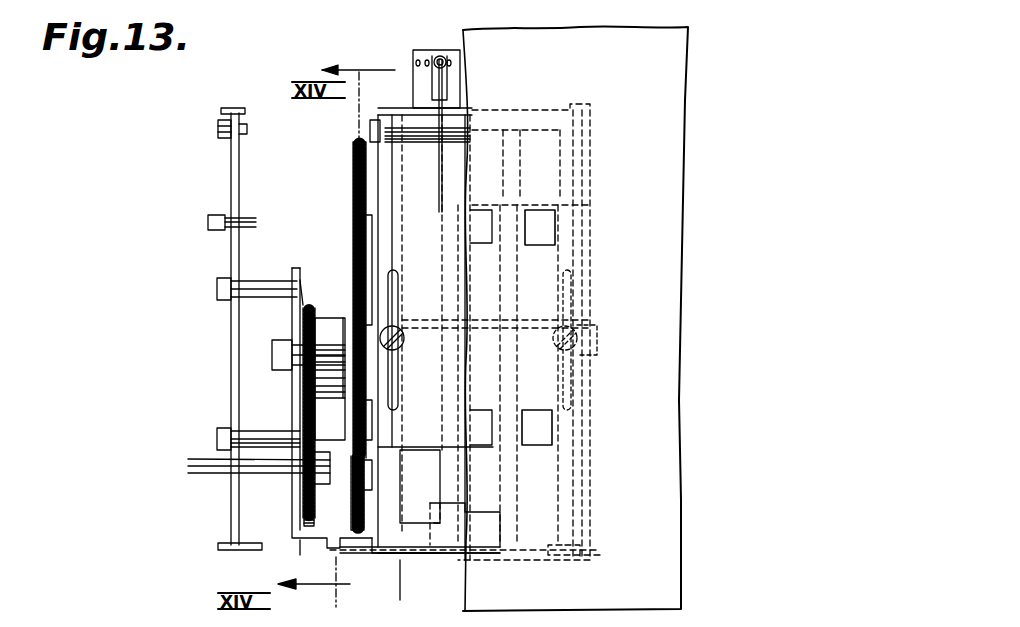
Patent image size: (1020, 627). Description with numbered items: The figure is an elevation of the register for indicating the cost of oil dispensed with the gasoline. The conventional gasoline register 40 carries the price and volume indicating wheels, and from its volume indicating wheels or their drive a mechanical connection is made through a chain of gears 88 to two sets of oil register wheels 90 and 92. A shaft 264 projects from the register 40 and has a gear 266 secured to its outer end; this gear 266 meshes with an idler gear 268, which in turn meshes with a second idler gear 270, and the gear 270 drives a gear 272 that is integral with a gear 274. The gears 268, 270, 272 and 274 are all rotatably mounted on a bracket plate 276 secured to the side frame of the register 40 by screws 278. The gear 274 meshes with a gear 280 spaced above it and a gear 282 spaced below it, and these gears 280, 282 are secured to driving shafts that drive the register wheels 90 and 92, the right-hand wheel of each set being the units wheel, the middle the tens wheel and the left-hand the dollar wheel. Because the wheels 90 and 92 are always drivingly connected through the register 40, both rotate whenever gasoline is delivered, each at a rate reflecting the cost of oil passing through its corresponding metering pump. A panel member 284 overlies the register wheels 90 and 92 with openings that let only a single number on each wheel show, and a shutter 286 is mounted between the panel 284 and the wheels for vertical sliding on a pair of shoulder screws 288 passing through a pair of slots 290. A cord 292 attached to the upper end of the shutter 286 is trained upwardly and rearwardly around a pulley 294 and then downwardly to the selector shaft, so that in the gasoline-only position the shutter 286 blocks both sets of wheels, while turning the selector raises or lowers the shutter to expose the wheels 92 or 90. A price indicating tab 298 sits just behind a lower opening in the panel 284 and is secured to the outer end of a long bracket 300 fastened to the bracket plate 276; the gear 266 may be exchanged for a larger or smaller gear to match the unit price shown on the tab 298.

The register 40 is at (240, 189).
The chain of gears 88 is at (327, 176).
The register wheels 90 is at (515, 102).
The register wheels 92 is at (442, 527).
The shaft 264 is at (283, 476).
The gear 266 is at (306, 525).
The idler gear 268 is at (310, 524).
The second idler gear 270 is at (313, 425).
The gear 272 is at (310, 307).
The gear 274 is at (352, 348).
The bracket plate 276 is at (318, 258).
The screws 278 is at (303, 290).
The gear 280 is at (354, 200).
The gear 282 is at (352, 472).
The panel member 284 is at (684, 406).
The shutter 286 is at (426, 203).
The shoulder screws 288 is at (425, 358).
The slots 290 is at (396, 280).
The cord 292 is at (446, 88).
The pulley 294 is at (440, 56).
The price indicating tab 298 is at (448, 503).
The bracket 300 is at (400, 556).